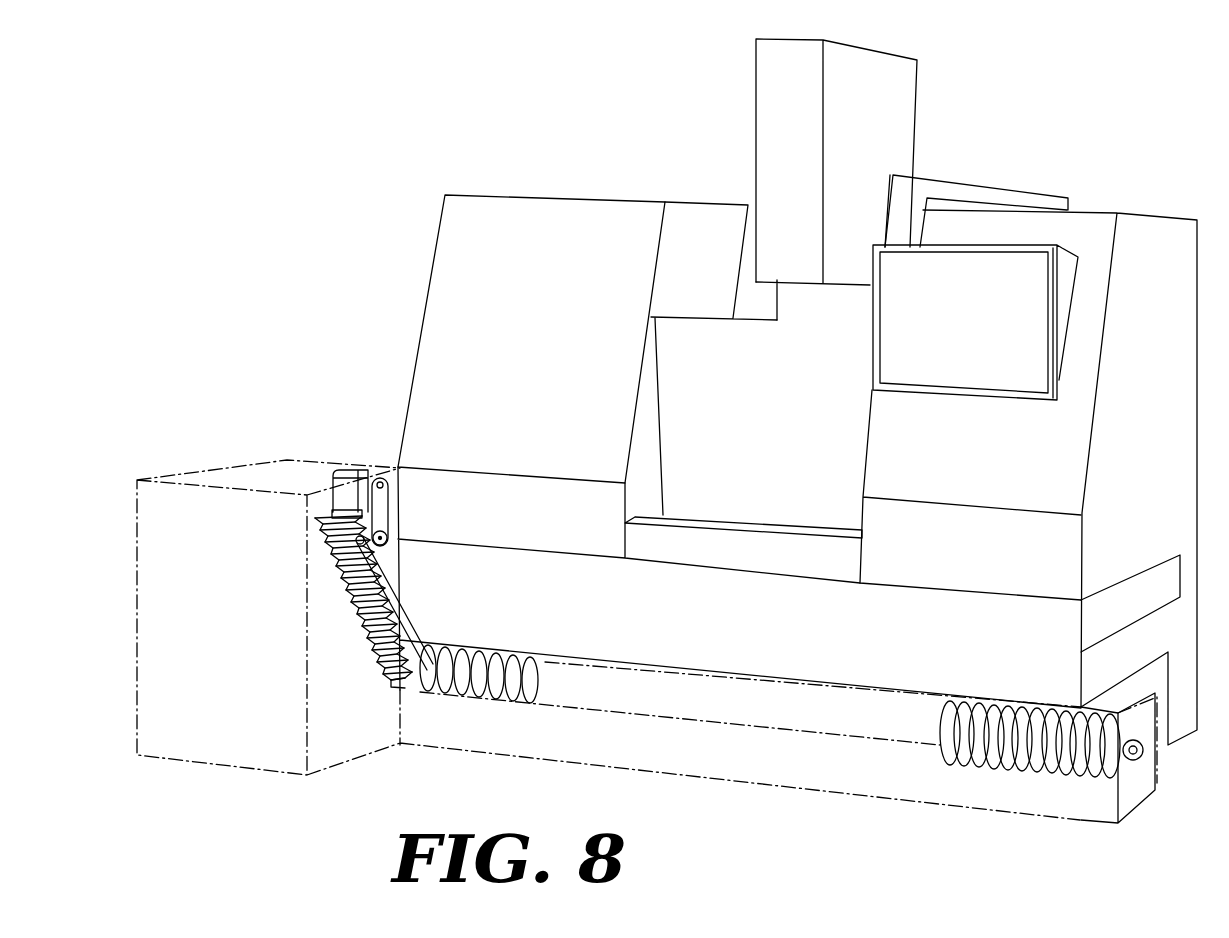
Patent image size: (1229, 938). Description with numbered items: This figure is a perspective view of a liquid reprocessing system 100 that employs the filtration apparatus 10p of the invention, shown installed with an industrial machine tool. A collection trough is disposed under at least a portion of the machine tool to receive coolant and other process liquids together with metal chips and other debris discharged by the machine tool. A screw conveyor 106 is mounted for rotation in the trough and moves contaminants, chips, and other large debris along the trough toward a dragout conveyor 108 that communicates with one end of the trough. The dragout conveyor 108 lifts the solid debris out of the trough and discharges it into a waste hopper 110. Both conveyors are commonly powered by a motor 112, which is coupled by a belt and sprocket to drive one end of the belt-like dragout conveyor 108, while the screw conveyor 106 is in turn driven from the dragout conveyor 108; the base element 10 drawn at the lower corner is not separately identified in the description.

The machine tool 100 is at (400, 266).
The phantom enclosure 110 is at (137, 557).
The second device (10') 10p is at (195, 428).
The actuator linkage 112 is at (390, 510).
The bellows 108 is at (400, 602).
The coil spring 106 is at (955, 753).
The base block device 10 is at (1103, 812).